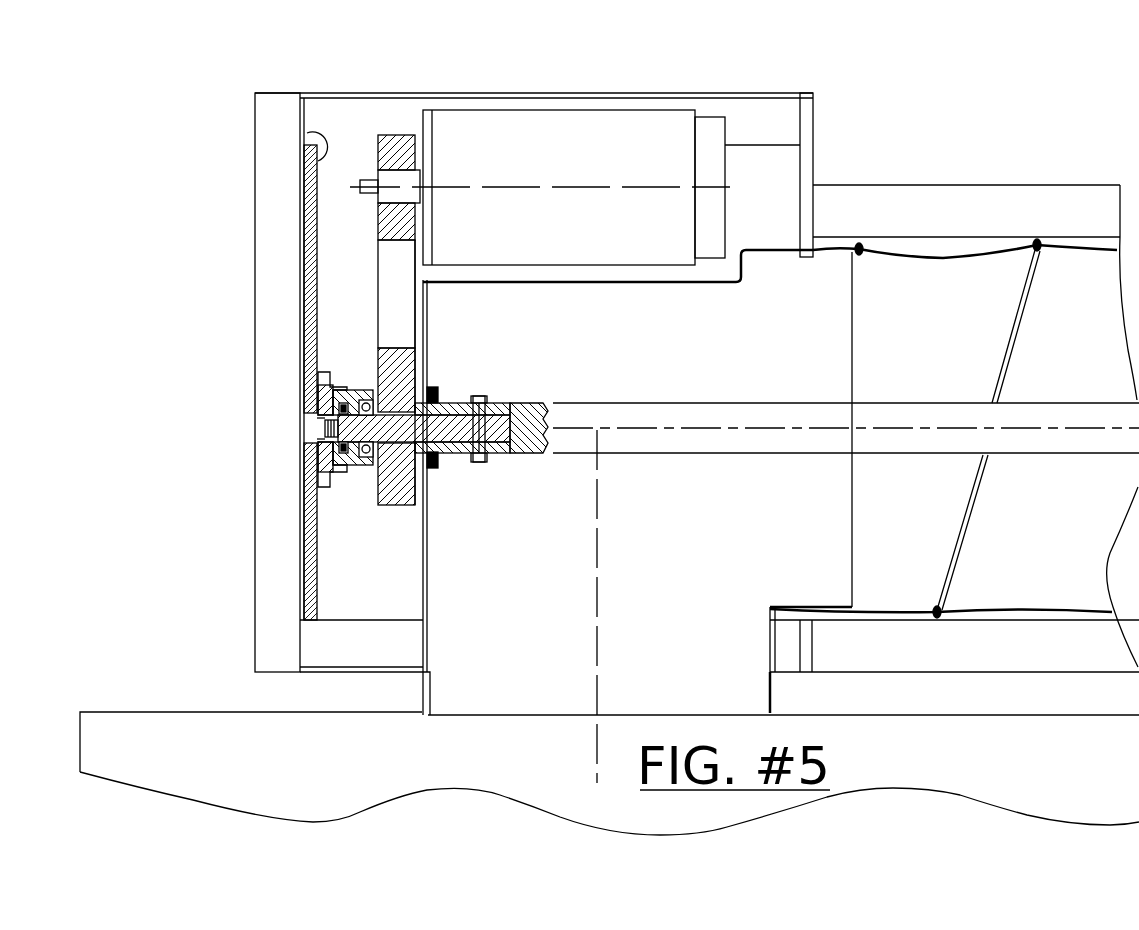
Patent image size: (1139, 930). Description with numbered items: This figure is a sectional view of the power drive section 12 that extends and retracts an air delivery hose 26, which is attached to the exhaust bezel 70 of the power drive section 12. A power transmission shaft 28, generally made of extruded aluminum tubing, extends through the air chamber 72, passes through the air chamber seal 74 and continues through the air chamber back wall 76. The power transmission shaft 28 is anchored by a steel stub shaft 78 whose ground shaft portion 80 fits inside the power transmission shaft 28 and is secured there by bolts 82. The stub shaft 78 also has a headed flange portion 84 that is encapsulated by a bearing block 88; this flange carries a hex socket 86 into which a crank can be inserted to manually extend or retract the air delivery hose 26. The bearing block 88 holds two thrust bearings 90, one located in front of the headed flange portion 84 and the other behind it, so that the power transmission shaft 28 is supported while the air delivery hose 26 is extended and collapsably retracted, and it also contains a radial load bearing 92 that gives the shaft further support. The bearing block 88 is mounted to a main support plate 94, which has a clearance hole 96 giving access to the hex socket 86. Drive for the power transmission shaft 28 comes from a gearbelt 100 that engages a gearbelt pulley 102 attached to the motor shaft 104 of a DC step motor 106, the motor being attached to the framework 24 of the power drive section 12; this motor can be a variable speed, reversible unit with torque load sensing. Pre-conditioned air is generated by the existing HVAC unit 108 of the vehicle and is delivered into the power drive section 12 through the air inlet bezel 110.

The power drive section 12 is at (578, 58).
The framework 24 is at (813, 113).
The air delivery hose 26 is at (947, 258).
The power transmission shaft 28 is at (962, 403).
The exhaust bezel 70 is at (815, 250).
The air chamber 72 is at (739, 348).
The air chamber seal 74 is at (434, 386).
The air chamber back wall 76 is at (428, 318).
The steel stub shaft 78 is at (452, 468).
The ground shaft portion 80 is at (418, 508).
The bolts 82 is at (487, 395).
The headed flange portion 84 is at (328, 482).
The hex socket 86 is at (337, 430).
The bearing block 88 is at (350, 498).
The thrust bearings 90 is at (340, 400).
The radial load bearing 92 is at (360, 392).
The main support plate 94 is at (303, 128).
The clearance hole 96 is at (287, 414).
The gearbelt 100 is at (377, 255).
The gearbelt pulley 102 is at (395, 136).
The motor shaft 104 is at (300, 107).
The DC step motor 106 is at (653, 110).
The HVAC unit 108 is at (423, 760).
The air inlet bezel 110 is at (430, 697).